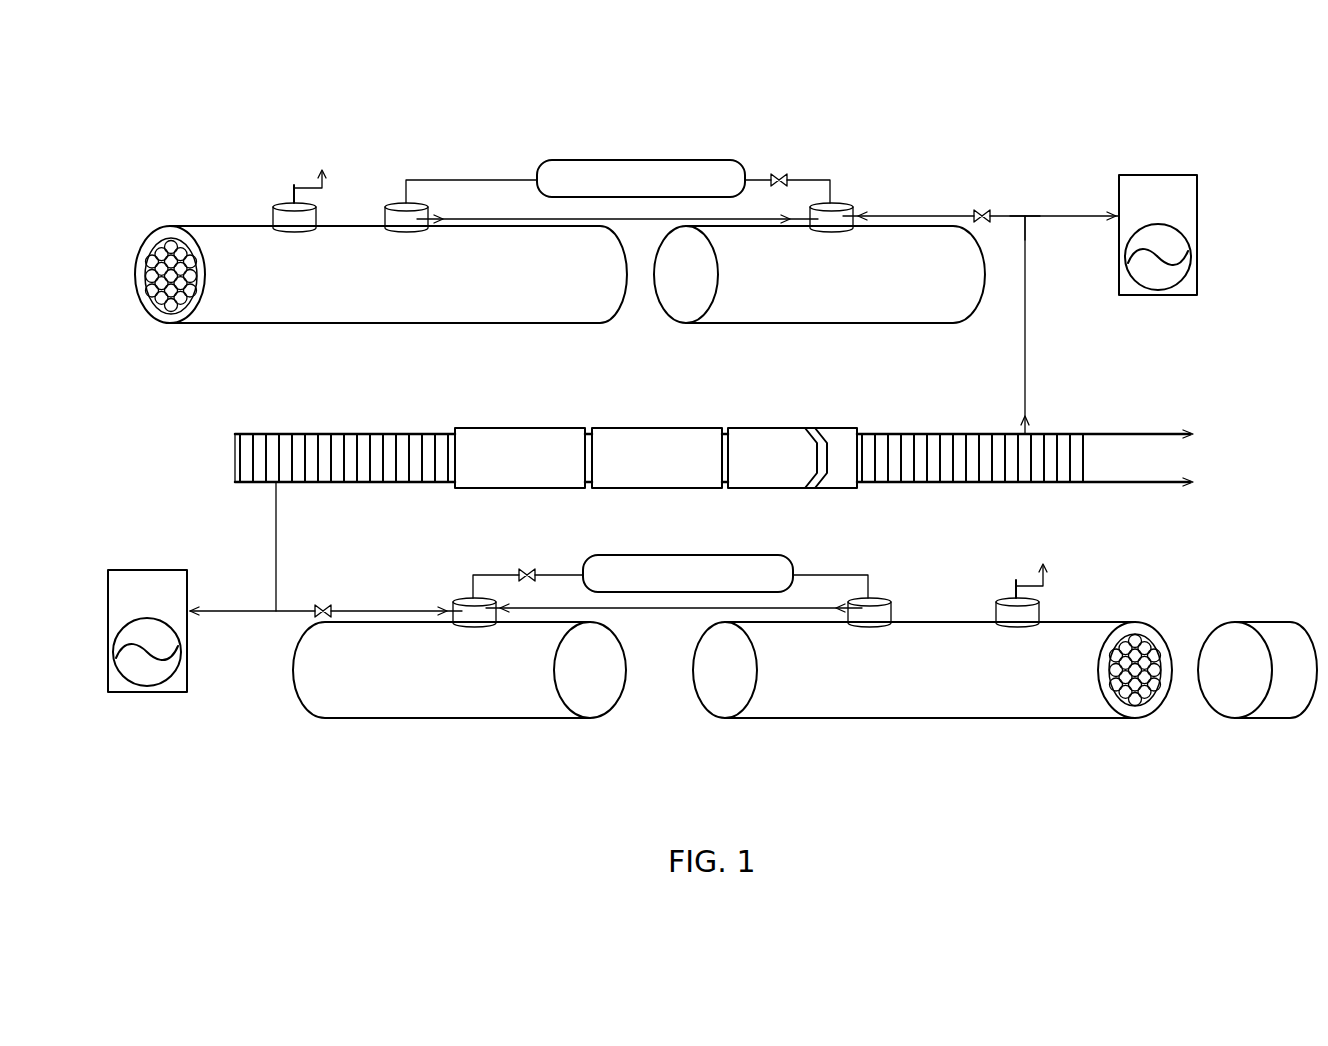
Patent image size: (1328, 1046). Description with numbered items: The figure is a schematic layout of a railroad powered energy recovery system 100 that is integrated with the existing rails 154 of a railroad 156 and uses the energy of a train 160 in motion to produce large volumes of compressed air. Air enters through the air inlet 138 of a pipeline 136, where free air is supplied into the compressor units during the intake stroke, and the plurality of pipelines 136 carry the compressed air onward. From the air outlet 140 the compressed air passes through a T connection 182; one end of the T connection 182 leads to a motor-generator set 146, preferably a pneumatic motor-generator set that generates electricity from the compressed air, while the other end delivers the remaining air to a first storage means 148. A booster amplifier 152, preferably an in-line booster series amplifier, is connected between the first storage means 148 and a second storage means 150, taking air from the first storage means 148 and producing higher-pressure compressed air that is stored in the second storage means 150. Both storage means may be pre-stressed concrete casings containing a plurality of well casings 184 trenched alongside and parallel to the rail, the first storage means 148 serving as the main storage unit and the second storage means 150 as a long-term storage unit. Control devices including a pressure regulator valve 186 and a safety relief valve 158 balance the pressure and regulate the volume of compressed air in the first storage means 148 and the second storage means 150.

The railroad powered energy recovery system 100 is at (752, 92).
The pipelines 136 is at (1160, 434).
The air inlet 138 is at (228, 434).
The air outlet 140 is at (1032, 376).
The motor-generator set 146 is at (1162, 175).
The first storage means 148 is at (898, 226).
The second storage means 150 is at (672, 474).
The booster amplifier 152 is at (588, 160).
The rails 154 is at (297, 434).
The railroad 156 is at (392, 422).
The safety relief valve 158 is at (280, 203).
The train 160 is at (519, 428).
The T connection 182 is at (1030, 224).
The well casings 184 is at (1143, 638).
The pressure regulator valve 186 is at (776, 172).